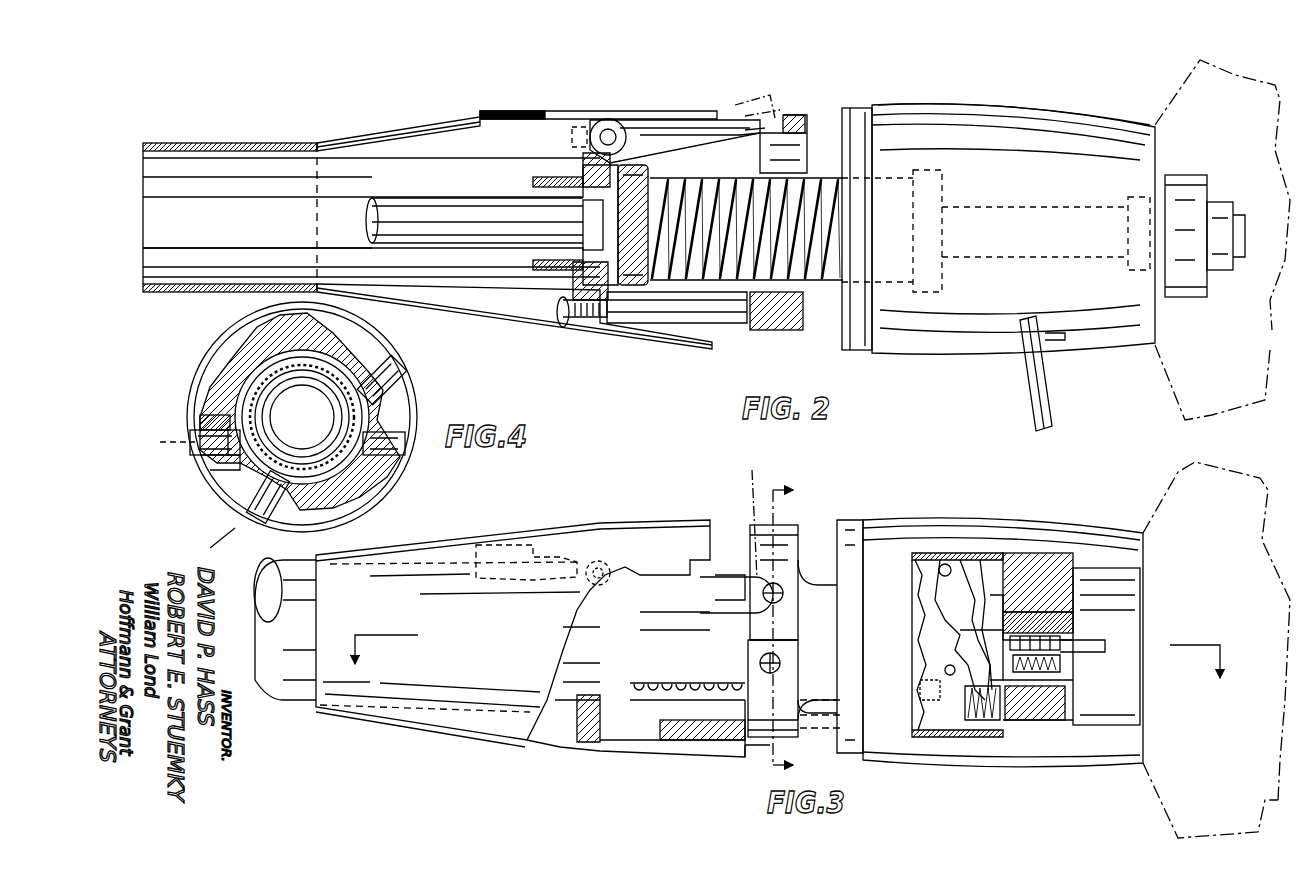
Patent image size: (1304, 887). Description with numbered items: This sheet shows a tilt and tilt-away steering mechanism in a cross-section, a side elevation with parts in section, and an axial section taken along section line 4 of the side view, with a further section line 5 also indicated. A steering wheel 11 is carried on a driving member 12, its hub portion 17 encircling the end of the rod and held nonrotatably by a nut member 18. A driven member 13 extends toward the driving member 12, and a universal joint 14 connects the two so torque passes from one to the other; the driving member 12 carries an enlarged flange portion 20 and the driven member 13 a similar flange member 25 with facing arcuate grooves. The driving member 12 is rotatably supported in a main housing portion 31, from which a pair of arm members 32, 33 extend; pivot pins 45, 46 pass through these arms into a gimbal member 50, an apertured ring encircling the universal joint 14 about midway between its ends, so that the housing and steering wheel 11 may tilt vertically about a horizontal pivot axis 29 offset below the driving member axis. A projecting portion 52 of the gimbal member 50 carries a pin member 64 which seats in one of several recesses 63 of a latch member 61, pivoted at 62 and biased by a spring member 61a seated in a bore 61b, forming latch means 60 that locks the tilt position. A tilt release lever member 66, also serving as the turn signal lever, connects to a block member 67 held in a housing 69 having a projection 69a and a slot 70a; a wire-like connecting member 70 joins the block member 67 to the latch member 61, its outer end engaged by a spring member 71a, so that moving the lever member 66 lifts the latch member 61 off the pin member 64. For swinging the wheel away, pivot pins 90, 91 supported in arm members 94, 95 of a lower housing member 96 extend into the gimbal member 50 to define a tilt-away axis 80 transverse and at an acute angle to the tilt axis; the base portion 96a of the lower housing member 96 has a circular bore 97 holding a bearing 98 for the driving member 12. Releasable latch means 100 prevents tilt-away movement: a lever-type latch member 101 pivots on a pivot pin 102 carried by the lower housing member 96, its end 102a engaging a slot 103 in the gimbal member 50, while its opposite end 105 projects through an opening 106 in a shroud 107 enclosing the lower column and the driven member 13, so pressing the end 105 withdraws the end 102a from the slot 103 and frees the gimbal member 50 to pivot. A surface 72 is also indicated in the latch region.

In FIG. 2, the steering wheel 11 is at (1188, 90).
In FIG. 3, the steering wheel 11 is at (1180, 490).
In FIG. 2, the driving member 12 is at (995, 215).
In FIG. 2, the driven member 13 is at (430, 228).
In FIG. 3, the driven member 13 is at (625, 692).
In FIG. 2, the universal joint 14 is at (818, 292).
In FIG. 4, the universal joint 14 is at (345, 406).
In FIG. 3, the universal joint 14 is at (712, 700).
In FIG. 2, the hub portion 17 is at (1183, 298).
In FIG. 2, the nut member 18 is at (1228, 270).
In FIG. 2, the flange portion 20 is at (935, 170).
In FIG. 2, the flange member 25 is at (630, 324).
In FIG. 4, the pivot axis 29 is at (180, 440).
In FIG. 3, the pivot axis 29 is at (782, 660).
In FIG. 3, the main housing portion 31 is at (1105, 607).
In FIG. 4, the arm member 32 is at (205, 425).
In FIG. 4, the arm member 33 is at (380, 468).
In FIG. 3, the arm member 33 is at (790, 705).
In FIG. 4, the pivot pin 45 is at (195, 430).
In FIG. 4, the pivot pin 46 is at (400, 455).
In FIG. 3, the pivot pin 46 is at (748, 660).
In FIG. 2, the gimbal member 50 is at (765, 331).
In FIG. 4, the gimbal member 50 is at (220, 340).
In FIG. 3, the gimbal member 50 is at (765, 525).
In FIG. 3, the projecting portion 52 is at (815, 585).
In FIG. 3, the latch means 60 is at (992, 612).
In FIG. 3, the latch member 61 is at (960, 605).
In FIG. 3, the spring member 61a is at (1015, 722).
In FIG. 3, the bore 61b is at (1040, 722).
In FIG. 3, the pivot 62 is at (945, 563).
In FIG. 3, the recesses 63 is at (955, 678).
In FIG. 3, the pin member 64 is at (940, 683).
In FIG. 2, the tilt release lever member 66 is at (1030, 412).
In FIG. 3, the tilt release lever member 66 is at (1052, 633).
In FIG. 3, the block member 67 is at (1045, 612).
In FIG. 3, the housing 69 is at (1080, 648).
In FIG. 3, the projection 69a is at (1080, 652).
In FIG. 3, the connecting member 70 is at (1015, 636).
In FIG. 3, the slot 70a is at (1108, 647).
In FIG. 3, the spring member 71a is at (1080, 716).
In FIG. 3, the cam surface 72 is at (940, 628).
In FIG. 4, the tilt-away axis 80 is at (238, 528).
In FIG. 2, the pivot pin 90 is at (845, 250).
In FIG. 4, the pivot pin 90 is at (262, 515).
In FIG. 3, the pivot pin 90 is at (840, 706).
In FIG. 4, the pivot pin 91 is at (385, 355).
In FIG. 3, the pivot pin 91 is at (762, 596).
In FIG. 4, the arm member 94 is at (372, 360).
In FIG. 3, the arm member 94 is at (725, 580).
In FIG. 2, the arm member 95 is at (845, 228).
In FIG. 4, the arm member 95 is at (250, 490).
In FIG. 3, the arm member 95 is at (840, 735).
In FIG. 2, the lower housing member 96 is at (380, 226).
In FIG. 2, the base portion 96a is at (484, 224).
In FIG. 2, the circular bore 97 is at (560, 258).
In FIG. 2, the bearing 98 is at (530, 308).
In FIG. 2, the latch means 100 is at (642, 112).
In FIG. 2, the latch member 101 is at (663, 132).
In FIG. 3, the latch member 101 is at (575, 545).
In FIG. 2, the pivot pin 102 is at (600, 120).
In FIG. 3, the pivot pin 102 is at (640, 545).
In FIG. 2, the end of lever 102a is at (770, 125).
In FIG. 2, the slot 103 is at (760, 98).
In FIG. 3, the slot 103 is at (742, 514).
In FIG. 2, the end of lever member 105 is at (512, 109).
In FIG. 2, the opening 106 is at (548, 109).
In FIG. 2, the shroud 107 is at (428, 124).
In FIG. 3, the section line 4- 4 is at (792, 637).
In FIG. 3, the section line 5- 5 is at (787, 672).